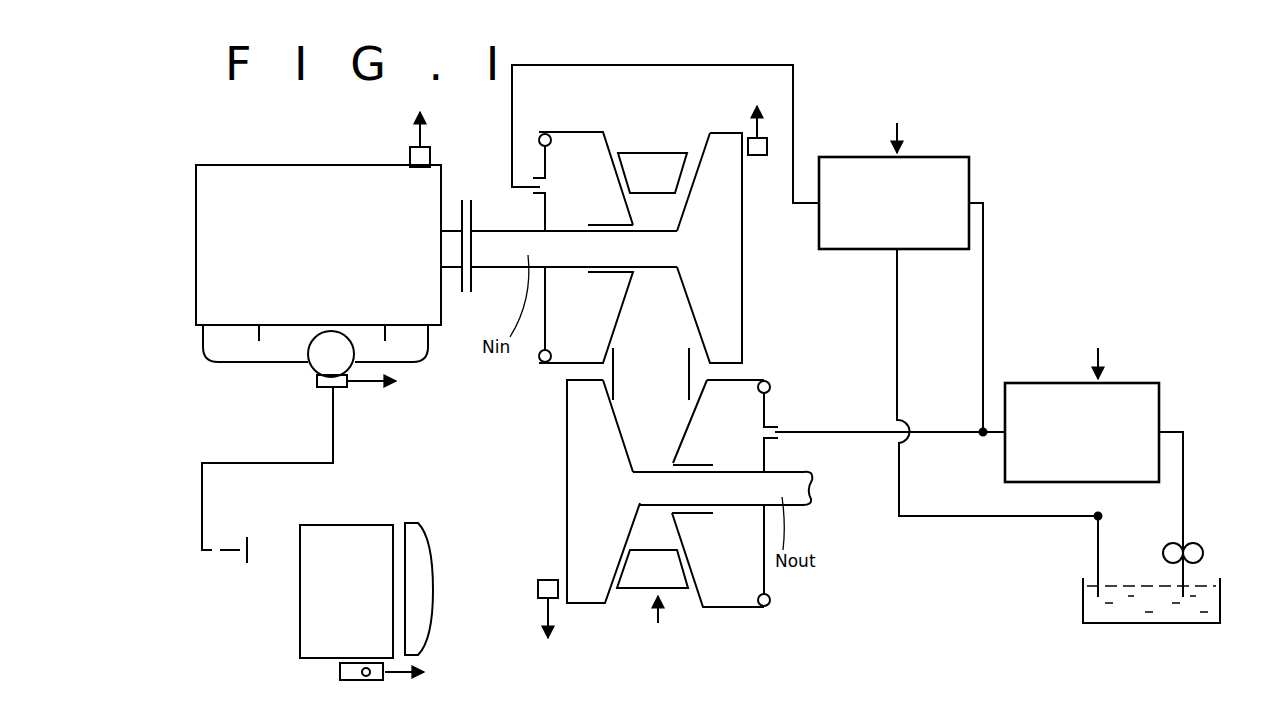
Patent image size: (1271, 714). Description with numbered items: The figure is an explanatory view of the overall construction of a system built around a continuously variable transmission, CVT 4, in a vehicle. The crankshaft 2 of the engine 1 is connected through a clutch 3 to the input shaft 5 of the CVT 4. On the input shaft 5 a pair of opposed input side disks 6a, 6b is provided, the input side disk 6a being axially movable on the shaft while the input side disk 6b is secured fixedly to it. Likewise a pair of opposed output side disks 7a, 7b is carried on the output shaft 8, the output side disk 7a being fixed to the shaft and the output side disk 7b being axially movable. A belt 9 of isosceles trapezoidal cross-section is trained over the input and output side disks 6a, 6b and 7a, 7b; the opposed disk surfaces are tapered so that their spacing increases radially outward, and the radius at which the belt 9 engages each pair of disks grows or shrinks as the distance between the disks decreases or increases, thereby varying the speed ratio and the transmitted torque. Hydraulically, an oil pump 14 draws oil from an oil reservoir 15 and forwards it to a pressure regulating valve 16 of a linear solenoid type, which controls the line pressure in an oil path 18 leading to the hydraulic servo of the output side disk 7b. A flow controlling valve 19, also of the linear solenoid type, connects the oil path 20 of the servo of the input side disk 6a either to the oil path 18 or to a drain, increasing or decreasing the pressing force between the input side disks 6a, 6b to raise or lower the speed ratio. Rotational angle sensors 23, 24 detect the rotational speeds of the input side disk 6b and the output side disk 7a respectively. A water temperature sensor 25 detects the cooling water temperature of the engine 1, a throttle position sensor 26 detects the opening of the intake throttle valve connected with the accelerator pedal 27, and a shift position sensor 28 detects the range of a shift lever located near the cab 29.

The engine 1 is at (273, 197).
The crankshaft 2 is at (450, 258).
The clutch 3 is at (472, 208).
The CVT 4 is at (652, 601).
The input shaft 5 is at (496, 250).
The input side disk 6a is at (567, 155).
The input side disk 6b is at (722, 335).
The output side disk 7a is at (591, 577).
The output side disk 7b is at (730, 577).
The output shaft 8 is at (797, 487).
The belt 9 is at (656, 165).
The oil pump 14 is at (1203, 553).
The oil reservoir 15 is at (1222, 604).
The pressure regulating valve 16 is at (1132, 392).
The oil path 18 is at (983, 358).
The flow controlling valve 19 is at (957, 184).
The oil path 20 is at (745, 64).
The rotational angle sensor 23 is at (758, 157).
The rotational angle sensor 24 is at (538, 593).
The water temperature sensor 25 is at (410, 158).
The throttle position sensor 26 is at (318, 381).
The accelerator pedal 27 is at (255, 550).
The shift position sensor 28 is at (367, 678).
The cab 29 is at (366, 555).